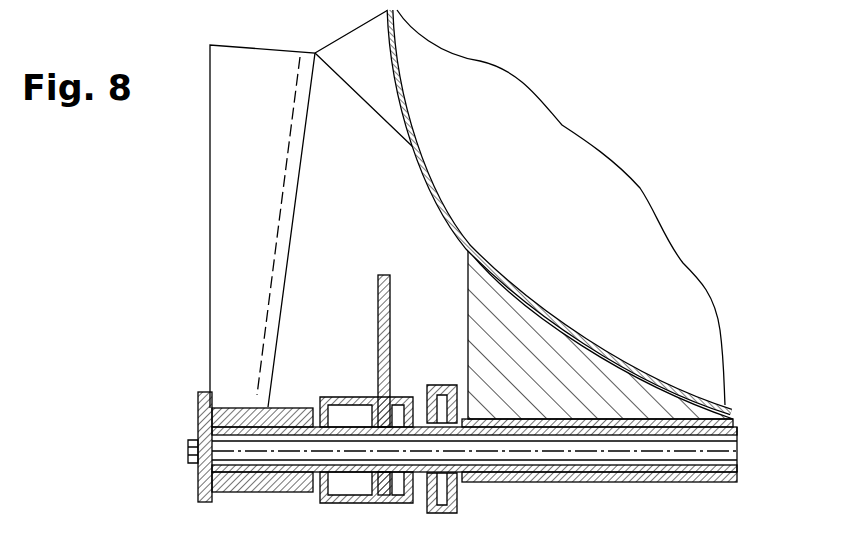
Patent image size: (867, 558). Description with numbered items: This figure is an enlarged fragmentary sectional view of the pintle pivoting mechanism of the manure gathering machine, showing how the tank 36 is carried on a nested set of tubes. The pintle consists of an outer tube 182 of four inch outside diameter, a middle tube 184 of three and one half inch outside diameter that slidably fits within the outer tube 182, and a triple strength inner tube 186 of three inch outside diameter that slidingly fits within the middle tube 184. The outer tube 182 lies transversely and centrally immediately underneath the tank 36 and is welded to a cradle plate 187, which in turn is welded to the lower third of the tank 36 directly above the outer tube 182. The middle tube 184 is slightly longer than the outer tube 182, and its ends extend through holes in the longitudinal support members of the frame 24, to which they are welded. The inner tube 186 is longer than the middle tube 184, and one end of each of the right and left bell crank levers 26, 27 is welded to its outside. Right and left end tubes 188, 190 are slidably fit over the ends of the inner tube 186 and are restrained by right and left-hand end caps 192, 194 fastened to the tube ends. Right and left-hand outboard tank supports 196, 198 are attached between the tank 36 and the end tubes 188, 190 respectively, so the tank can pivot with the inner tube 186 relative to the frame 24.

The tank 36 is at (445, 190).
The cradle plate 187 is at (545, 352).
The outer tube 182 is at (733, 420).
The middle tube 184 is at (733, 424).
The inner tube 186 is at (735, 428).
The right-hand outboard tank support 196 is at (251, 209).
The left-hand outboard tank support 198 is at (237, 268).
The right bell crank lever 26 is at (244, 385).
The left bell crank lever 27 is at (377, 303).
The frame 24 is at (433, 387).
The right-hand end cap 192 is at (137, 447).
The left-hand end cap 194 is at (198, 497).
The right end tube 188 is at (193, 463).
The left end tube 190 is at (255, 492).